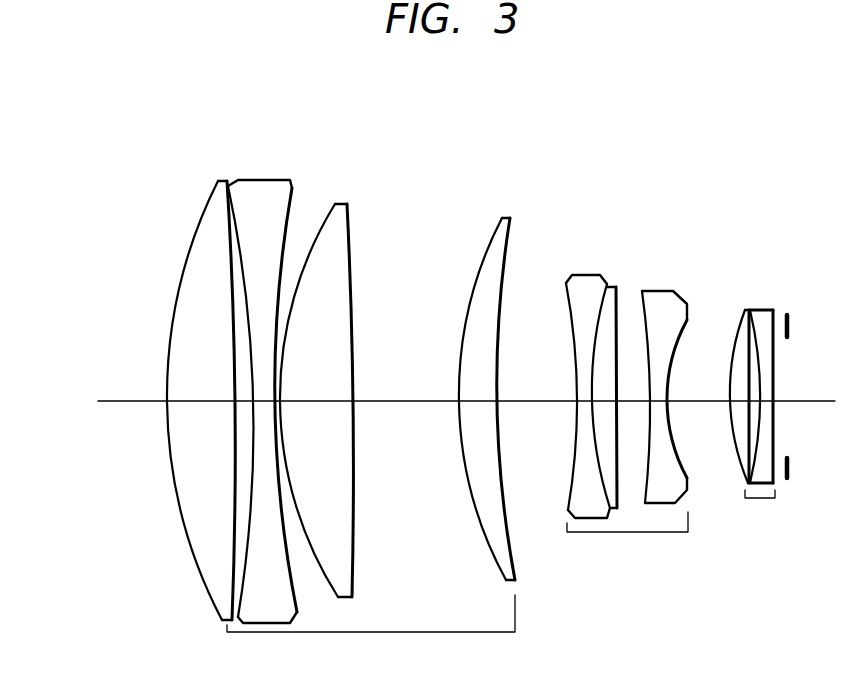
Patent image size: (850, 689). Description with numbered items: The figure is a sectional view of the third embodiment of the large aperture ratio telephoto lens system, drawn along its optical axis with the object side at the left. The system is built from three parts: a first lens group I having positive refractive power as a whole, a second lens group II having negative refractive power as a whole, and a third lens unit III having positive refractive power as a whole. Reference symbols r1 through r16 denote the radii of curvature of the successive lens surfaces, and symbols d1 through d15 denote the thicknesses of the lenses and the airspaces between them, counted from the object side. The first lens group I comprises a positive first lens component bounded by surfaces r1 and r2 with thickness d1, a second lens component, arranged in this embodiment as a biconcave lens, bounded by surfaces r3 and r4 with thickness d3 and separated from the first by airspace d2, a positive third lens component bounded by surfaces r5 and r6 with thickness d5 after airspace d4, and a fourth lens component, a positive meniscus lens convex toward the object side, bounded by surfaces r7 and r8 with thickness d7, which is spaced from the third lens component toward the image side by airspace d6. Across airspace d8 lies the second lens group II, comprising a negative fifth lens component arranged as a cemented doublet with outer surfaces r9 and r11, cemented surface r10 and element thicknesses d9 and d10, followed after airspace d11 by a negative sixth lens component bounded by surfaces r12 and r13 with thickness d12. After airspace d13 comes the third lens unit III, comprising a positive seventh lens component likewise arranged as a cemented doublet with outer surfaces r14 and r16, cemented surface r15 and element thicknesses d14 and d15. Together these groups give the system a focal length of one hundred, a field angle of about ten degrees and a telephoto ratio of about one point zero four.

The radius of curvature of first lens surface r1 is at (212, 190).
The radius of curvature of second lens surface r2 is at (226, 182).
The radius of curvature of third lens surface r3 is at (233, 195).
The radius of curvature of fourth lens surface r4 is at (291, 195).
The radius of curvature of fifth lens surface r5 is at (333, 218).
The radius of curvature of sixth lens surface r6 is at (351, 237).
The radius of curvature of seventh lens surface r7 is at (500, 232).
The radius of curvature of eighth lens surface r8 is at (509, 240).
The radius of curvature of ninth lens surface r9 is at (568, 293).
The radius of curvature of tenth lens surface r10 is at (605, 296).
The radius of curvature of eleventh lens surface r11 is at (618, 300).
The radius of curvature of twelfth lens surface r12 is at (644, 302).
The radius of curvature of thirteenth lens surface r13 is at (688, 325).
The radius of curvature of fourteenth lens surface r14 is at (745, 322).
The radius of curvature of fifteenth lens surface r15 is at (755, 315).
The radius of curvature of sixteenth lens surface r16 is at (774, 322).
The thickness of first lens d1 is at (216, 401).
The airspace between first and second lenses d2 is at (236, 399).
The thickness of second lens d3 is at (265, 410).
The airspace between second and third lenses d4 is at (279, 399).
The thickness of third lens d5 is at (303, 403).
The airspace between third and fourth lenses d6 is at (397, 403).
The thickness of fourth lens d7 is at (474, 403).
The airspace between fourth and fifth lenses d8 is at (539, 403).
The thickness of first element of fifth lens d9 is at (576, 399).
The thickness of second element of fifth lens d10 is at (605, 399).
The airspace between fifth and sixth lenses d11 is at (632, 403).
The thickness of sixth lens d12 is at (660, 399).
The airspace between sixth and seventh lenses d13 is at (693, 402).
The thickness of first element of seventh lens d14 is at (735, 403).
The thickness of second element of seventh lens d15 is at (770, 403).
The first lens group I is at (371, 627).
The second lens group II is at (627, 536).
The third lens unit III is at (760, 508).